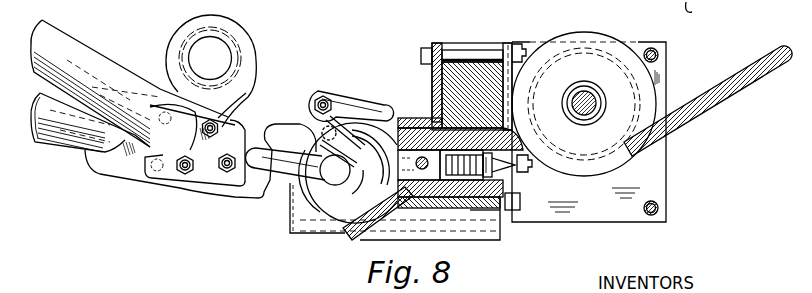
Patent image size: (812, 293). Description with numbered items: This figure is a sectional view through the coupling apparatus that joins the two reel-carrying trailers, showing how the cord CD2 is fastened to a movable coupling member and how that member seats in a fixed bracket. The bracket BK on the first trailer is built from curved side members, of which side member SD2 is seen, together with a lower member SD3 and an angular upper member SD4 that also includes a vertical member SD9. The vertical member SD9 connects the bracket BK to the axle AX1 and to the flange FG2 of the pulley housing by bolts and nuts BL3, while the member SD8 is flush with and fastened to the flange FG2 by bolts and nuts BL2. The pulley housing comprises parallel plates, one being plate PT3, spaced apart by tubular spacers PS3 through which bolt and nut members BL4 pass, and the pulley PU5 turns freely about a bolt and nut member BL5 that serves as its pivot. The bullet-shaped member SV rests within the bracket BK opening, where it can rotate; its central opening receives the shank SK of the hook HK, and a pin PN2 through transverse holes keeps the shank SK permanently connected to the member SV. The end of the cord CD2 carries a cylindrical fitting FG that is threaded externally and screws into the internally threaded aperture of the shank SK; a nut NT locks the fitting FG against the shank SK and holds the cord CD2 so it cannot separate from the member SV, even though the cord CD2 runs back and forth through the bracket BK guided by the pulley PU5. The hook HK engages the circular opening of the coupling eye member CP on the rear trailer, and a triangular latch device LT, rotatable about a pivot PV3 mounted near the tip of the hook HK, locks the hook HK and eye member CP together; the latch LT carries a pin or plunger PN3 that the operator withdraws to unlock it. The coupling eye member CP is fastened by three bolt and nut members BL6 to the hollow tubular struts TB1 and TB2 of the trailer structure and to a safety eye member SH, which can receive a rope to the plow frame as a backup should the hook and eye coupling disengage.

The safety eye member SH is at (232, 25).
The hollow tubular strut TB2 is at (96, 58).
The hollow tubular strut TB1 is at (58, 148).
The bolt and nut members BL6 is at (214, 128).
The coupling eye member CP is at (256, 197).
The side member SD2 is at (302, 213).
The pivot PV3 is at (319, 98).
The latch device LT is at (340, 90).
The pin or plunger PN3 is at (322, 133).
The vertical member SD9 is at (430, 42).
The upper member SD4 is at (398, 126).
The bullet-shaped member SV is at (417, 133).
The bracket BK is at (447, 56).
The bolts and nuts BL3 is at (450, 53).
The axle AX1 is at (477, 67).
The flange FG2 is at (519, 45).
The pulley PU5 is at (608, 68).
The tubular spacers PS3 is at (660, 52).
The bolt and nut members BL4 is at (660, 58).
The cord CD2 is at (730, 95).
The bolt and nut member BL5 is at (580, 118).
The cylindrical fitting FG is at (528, 176).
The plate PT3 is at (600, 217).
The bolts and nuts BL2 is at (518, 182).
The member SD8 is at (487, 257).
The pin PN2 is at (420, 170).
The shank SK is at (434, 175).
The nut NT is at (478, 172).
The hook HK is at (328, 213).
The lower member SD3 is at (407, 206).